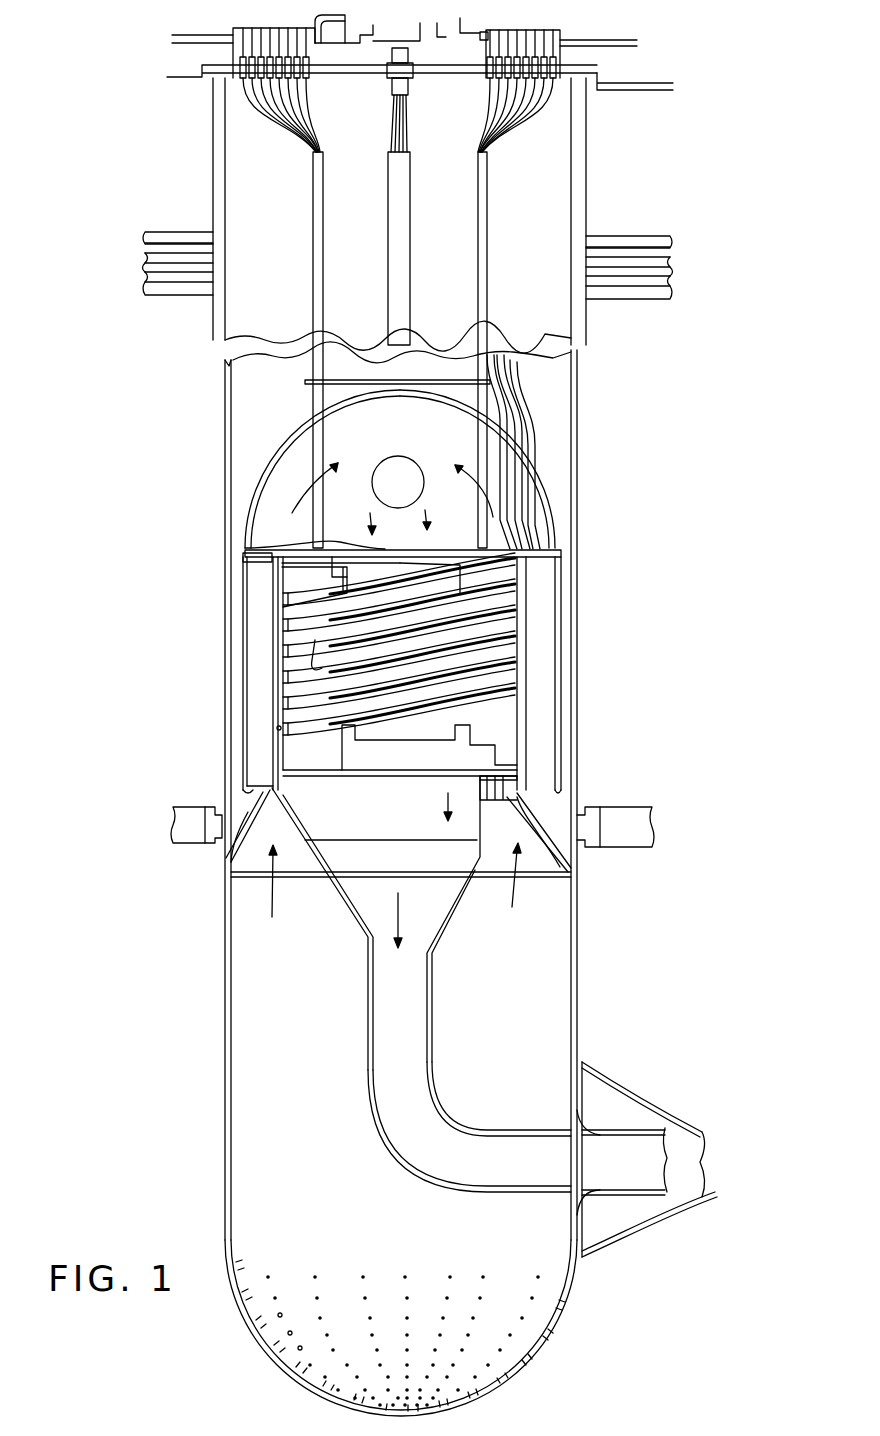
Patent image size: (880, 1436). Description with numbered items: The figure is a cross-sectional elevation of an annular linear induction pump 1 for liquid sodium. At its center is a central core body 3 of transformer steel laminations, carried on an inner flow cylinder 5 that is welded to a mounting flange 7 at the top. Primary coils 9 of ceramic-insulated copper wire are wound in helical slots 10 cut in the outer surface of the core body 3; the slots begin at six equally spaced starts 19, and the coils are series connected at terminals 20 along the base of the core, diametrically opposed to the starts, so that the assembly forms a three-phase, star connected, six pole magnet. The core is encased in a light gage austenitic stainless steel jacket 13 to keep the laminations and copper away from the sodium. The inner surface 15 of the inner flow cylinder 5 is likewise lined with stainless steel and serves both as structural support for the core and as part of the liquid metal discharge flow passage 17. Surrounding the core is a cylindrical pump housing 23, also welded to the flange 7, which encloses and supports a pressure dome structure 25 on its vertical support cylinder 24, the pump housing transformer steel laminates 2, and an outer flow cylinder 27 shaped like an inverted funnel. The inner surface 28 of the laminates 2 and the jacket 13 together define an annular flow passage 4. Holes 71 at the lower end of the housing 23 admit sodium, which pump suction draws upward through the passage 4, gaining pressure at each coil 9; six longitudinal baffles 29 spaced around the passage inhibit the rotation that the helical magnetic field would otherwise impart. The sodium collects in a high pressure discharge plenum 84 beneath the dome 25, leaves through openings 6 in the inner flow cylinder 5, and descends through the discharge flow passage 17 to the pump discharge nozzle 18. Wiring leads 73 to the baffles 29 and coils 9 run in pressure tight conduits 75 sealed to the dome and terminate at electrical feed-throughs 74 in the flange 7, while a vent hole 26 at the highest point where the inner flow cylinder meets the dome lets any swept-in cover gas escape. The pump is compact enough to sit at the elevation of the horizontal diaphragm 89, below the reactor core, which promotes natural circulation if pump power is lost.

The annular linear induction pump 1 is at (135, 607).
The pump housing transformer steel laminates 2 is at (258, 636).
The central core body 3 is at (292, 576).
The annular flow passage 4 is at (282, 800).
The inner flow cylinder 5 is at (535, 538).
The openings 6 is at (378, 468).
The mounting flange 7 is at (245, 97).
The primary coils 9 is at (505, 772).
The helical slots 10 is at (290, 690).
The austenitic stainless steel jacket 13 is at (278, 592).
The inner surface 15 is at (475, 862).
The liquid metal discharge flow passage 17 is at (437, 1000).
The pump discharge nozzle 18 is at (590, 1115).
The starts 19 is at (262, 540).
The terminals 20 is at (345, 770).
The cylindrical pump housing 23 is at (226, 392).
The vertical support cylinder 24 is at (555, 598).
The pressure dome structure 25 is at (543, 482).
The vent hole 26 is at (410, 385).
The outer flow cylinder 27 is at (258, 822).
The inner surface 28 is at (278, 731).
The longitudinal baffles 29 is at (570, 875).
The holes 71 is at (298, 1348).
The wiring leads 73 is at (215, 82).
The electrical feed-throughs 74 is at (565, 102).
The pressure tight conduits 75 is at (300, 300).
The high pressure discharge plenum 84 is at (262, 508).
The horizontal diaphragm 89 is at (615, 820).